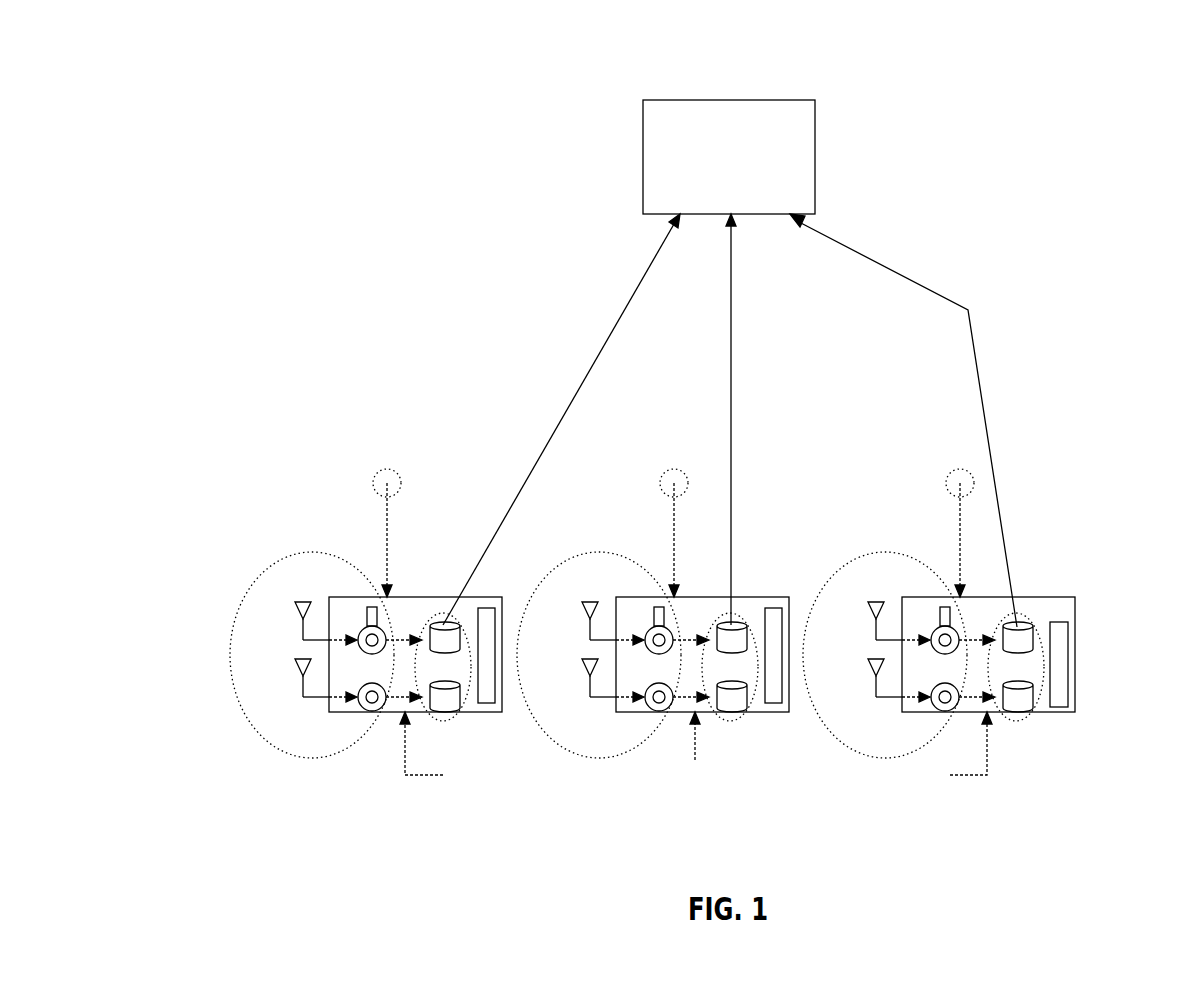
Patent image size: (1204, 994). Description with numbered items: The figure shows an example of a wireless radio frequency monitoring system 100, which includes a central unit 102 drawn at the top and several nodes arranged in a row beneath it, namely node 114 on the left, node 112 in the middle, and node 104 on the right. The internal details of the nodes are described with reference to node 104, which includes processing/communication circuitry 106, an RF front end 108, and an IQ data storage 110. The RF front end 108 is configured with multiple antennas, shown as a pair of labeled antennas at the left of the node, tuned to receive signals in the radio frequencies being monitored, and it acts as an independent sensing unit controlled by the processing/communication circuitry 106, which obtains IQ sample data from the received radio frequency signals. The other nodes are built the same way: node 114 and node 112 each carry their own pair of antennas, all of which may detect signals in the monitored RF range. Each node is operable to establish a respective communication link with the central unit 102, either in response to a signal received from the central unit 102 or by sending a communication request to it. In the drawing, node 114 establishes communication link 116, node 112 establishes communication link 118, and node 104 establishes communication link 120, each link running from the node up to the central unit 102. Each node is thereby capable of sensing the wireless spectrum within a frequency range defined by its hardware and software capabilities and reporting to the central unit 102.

The wireless RF monitoring system 100 is at (940, 86).
The central unit 102 is at (643, 113).
The node 104 is at (989, 589).
The processing/communication circuitry 106 is at (1110, 642).
The RF front end 108 is at (885, 589).
The IQ data storage 110 is at (1060, 611).
The node 112 is at (787, 597).
The node 114 is at (502, 597).
The communication link 116 is at (633, 295).
The communication link 118 is at (731, 358).
The communication link 120 is at (973, 343).